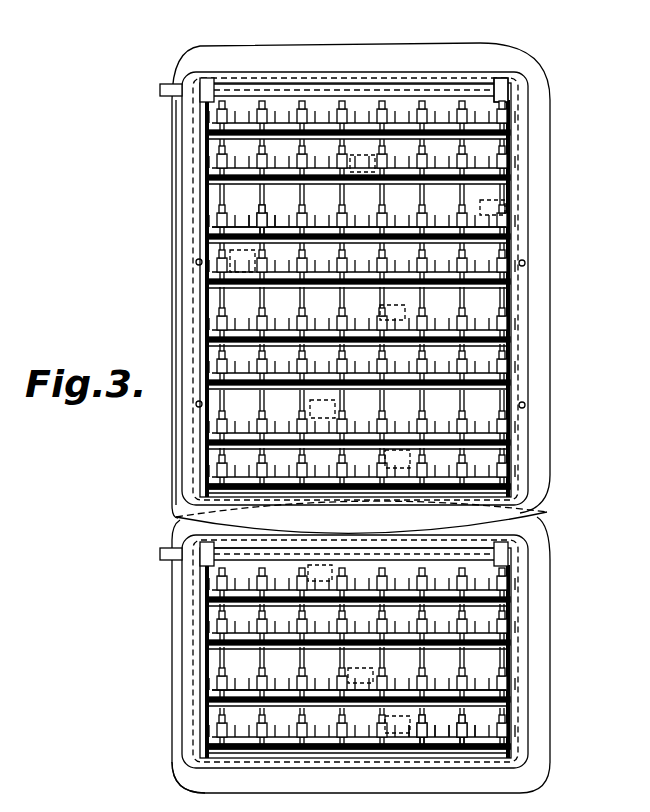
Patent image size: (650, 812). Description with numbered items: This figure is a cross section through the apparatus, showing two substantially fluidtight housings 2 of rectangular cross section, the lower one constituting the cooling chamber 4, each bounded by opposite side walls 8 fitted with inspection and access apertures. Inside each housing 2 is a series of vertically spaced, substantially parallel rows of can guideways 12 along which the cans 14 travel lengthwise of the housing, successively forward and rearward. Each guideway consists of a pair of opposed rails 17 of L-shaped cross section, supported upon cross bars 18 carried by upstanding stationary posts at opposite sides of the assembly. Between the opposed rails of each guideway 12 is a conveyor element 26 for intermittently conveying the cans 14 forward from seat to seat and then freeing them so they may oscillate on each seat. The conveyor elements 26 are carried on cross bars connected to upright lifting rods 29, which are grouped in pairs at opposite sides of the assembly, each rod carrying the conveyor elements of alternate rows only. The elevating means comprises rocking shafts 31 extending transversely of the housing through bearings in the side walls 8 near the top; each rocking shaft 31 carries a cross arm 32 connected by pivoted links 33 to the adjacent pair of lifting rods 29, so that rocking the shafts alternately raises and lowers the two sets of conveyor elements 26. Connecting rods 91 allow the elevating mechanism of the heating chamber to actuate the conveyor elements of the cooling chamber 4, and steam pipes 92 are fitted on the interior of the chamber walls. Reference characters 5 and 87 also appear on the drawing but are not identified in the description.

The fluidtight housing 2 is at (545, 528).
The cooling chamber 4 is at (200, 628).
The upper tray frame 5 is at (196, 252).
The side walls 8 is at (182, 330).
The can guideways 12 is at (247, 223).
The cans 14 is at (483, 210).
The rails 17 is at (416, 742).
The cross bars 18 is at (301, 110).
The conveyor elements 26 is at (363, 232).
The lifting rods 29 is at (222, 462).
The rocking shafts 31 is at (320, 95).
The cross arm 32 is at (510, 77).
The pivoted links 33 is at (203, 118).
The case bottom corner 87 is at (188, 787).
The connecting rods 91 is at (182, 370).
The steam pipes 92 is at (196, 266).